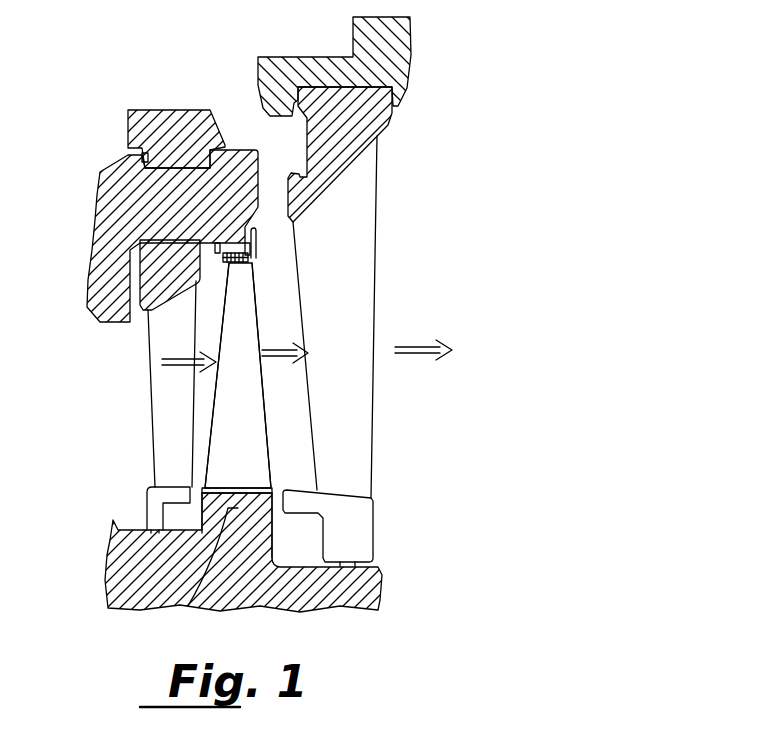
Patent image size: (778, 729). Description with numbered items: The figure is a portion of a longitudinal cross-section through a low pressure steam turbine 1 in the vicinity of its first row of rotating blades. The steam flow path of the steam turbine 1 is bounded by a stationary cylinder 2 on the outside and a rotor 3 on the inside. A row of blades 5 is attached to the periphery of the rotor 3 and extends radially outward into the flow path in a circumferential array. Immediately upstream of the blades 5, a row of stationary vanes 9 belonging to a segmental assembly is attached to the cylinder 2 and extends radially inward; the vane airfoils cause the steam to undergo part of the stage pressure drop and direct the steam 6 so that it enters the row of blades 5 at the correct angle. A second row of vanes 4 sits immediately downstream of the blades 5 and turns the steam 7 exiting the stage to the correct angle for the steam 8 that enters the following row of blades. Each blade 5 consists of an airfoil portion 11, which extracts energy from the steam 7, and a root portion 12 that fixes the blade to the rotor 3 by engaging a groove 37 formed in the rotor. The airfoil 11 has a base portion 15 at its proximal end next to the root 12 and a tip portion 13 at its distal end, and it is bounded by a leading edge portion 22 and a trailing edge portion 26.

The low pressure steam turbine 1 is at (153, 80).
The stationary cylinder 2 is at (411, 30).
The rotor 3 is at (385, 565).
The second row of vanes 4 is at (377, 421).
The blades 5 is at (255, 320).
The steam entering the row of blades 6 is at (192, 356).
The steam exiting the stage 7 is at (288, 348).
The steam entering the following row of blades 8 is at (413, 348).
The stationary vanes 9 is at (150, 388).
The airfoil portion 11 is at (247, 402).
The root portion 12 is at (277, 527).
The tip portion 13 is at (247, 266).
The base portion 15 is at (270, 475).
The leading edge portion 22 is at (263, 403).
The trailing edge portion 26 is at (212, 425).
The groove 37 is at (190, 610).